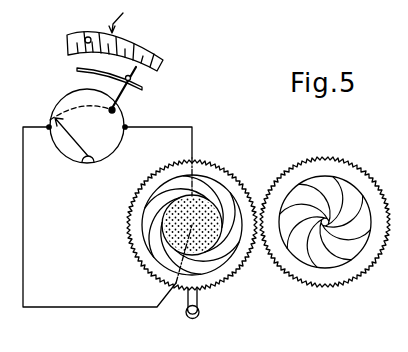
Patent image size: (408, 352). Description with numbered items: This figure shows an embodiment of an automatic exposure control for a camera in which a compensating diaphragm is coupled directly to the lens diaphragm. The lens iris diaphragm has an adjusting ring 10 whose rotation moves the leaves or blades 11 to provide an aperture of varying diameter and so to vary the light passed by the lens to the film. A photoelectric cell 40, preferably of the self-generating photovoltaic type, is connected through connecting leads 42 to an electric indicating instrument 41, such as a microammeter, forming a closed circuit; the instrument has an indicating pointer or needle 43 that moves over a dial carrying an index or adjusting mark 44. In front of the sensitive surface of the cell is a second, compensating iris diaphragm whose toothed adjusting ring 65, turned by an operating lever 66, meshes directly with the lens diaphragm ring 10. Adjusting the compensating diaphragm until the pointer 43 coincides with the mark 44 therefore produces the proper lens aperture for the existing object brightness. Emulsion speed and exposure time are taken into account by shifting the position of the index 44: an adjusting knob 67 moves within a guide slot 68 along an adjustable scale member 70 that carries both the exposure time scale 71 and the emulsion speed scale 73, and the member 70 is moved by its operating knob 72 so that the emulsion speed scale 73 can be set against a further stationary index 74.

The adjusting ring 10 is at (327, 165).
The leaves or blades 11 is at (325, 222).
The photoelectric cell 40 is at (170, 230).
The electric indicating instrument 41 is at (103, 160).
The connecting leads 42 is at (192, 141).
The indicating pointer or needle 43 is at (72, 145).
The index or adjusting mark 44 is at (115, 108).
The compensating diaphragm adjusting ring 65 is at (222, 166).
The operating lever 66 is at (198, 302).
The adjusting knob 67 is at (133, 80).
The guide slot 68 is at (75, 72).
The scale member 70 is at (157, 62).
The exposure time scale 71 is at (118, 53).
The adjusting knob 72 is at (88, 37).
The emulsion speed scale 73 is at (125, 41).
The stationary index 74 is at (125, 17).